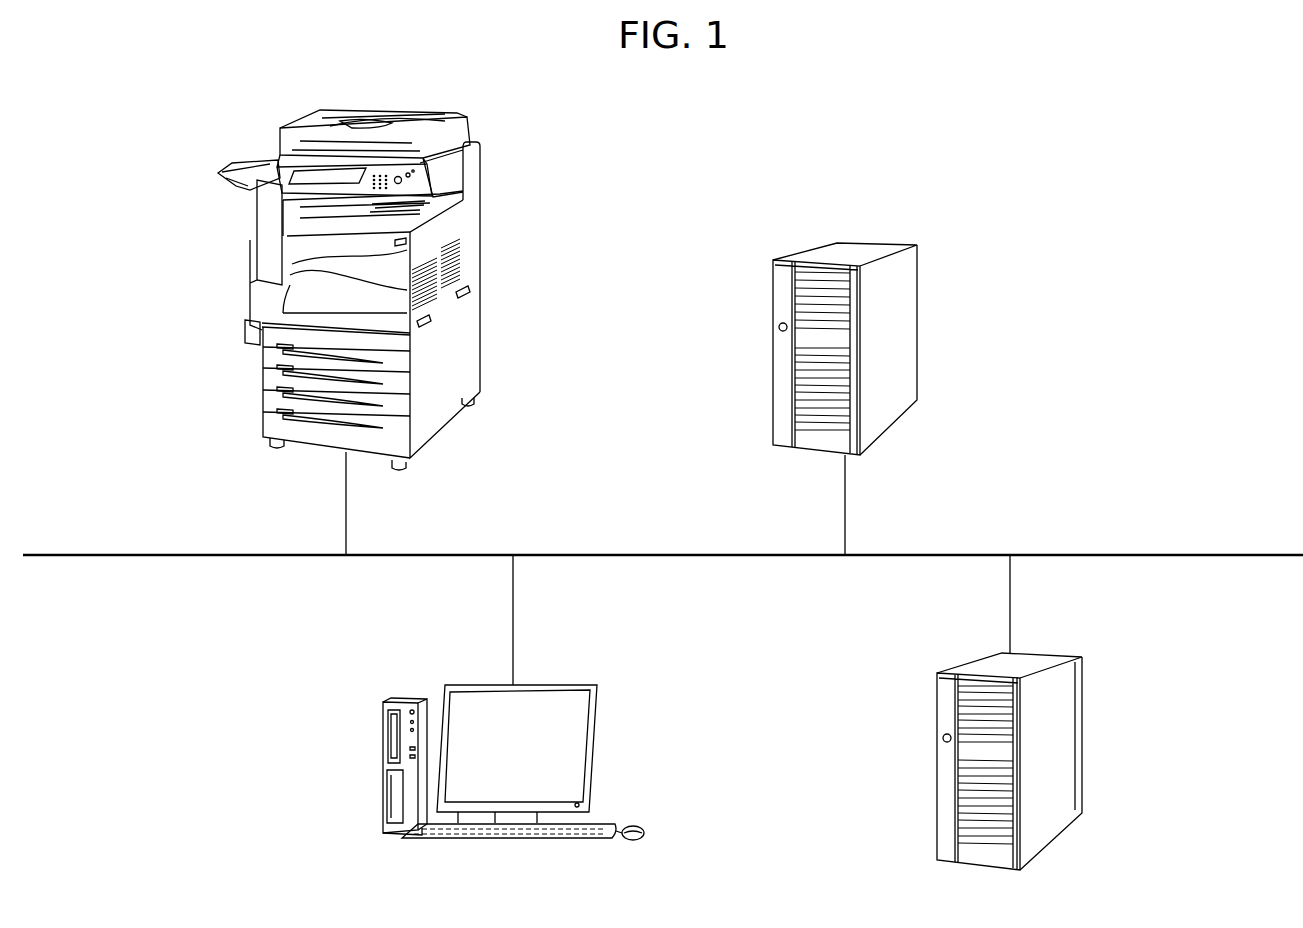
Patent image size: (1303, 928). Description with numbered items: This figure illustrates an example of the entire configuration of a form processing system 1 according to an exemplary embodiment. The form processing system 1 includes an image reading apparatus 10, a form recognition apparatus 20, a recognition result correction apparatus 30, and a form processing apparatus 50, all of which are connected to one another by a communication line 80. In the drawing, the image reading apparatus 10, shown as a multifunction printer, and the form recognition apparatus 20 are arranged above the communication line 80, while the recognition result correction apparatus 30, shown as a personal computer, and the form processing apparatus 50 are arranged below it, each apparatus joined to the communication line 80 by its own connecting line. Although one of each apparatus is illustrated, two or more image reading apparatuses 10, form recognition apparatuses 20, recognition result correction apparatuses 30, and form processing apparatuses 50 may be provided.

The form processing system 1 is at (1163, 148).
The image reading apparatus 10 is at (481, 192).
The form recognition apparatus 20 is at (917, 305).
The recognition result correction apparatus 30 is at (597, 710).
The form processing apparatus 50 is at (1082, 713).
The communication line 80 is at (1277, 555).